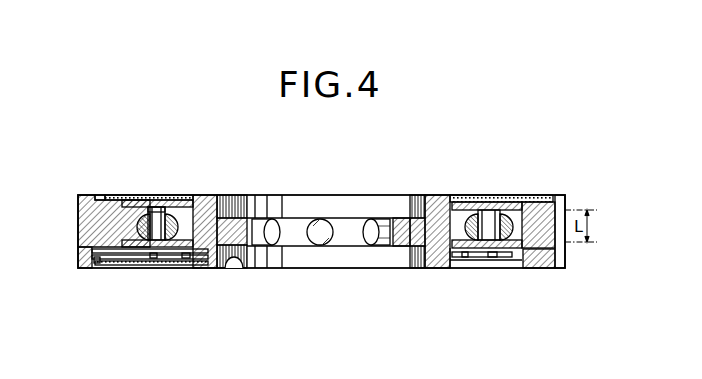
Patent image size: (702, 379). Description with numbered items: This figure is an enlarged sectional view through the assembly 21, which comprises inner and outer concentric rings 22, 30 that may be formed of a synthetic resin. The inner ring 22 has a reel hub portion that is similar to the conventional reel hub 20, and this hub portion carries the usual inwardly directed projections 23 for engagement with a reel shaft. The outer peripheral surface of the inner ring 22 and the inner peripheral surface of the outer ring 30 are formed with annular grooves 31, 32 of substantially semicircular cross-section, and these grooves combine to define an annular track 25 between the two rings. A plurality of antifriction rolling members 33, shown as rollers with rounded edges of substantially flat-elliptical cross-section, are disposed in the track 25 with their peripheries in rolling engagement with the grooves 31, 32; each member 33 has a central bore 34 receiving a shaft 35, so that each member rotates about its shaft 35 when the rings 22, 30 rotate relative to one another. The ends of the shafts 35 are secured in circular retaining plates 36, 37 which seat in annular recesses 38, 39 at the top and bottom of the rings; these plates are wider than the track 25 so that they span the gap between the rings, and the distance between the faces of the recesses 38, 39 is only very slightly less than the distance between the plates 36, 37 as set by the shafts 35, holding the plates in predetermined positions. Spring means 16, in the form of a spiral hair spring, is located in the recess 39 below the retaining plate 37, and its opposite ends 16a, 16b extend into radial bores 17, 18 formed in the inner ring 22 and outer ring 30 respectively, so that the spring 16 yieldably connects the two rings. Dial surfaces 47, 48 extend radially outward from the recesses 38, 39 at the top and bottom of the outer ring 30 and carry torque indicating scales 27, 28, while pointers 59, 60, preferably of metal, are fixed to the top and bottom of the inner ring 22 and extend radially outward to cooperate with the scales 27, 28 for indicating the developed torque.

The spring means 16 is at (475, 258).
The spring end 16a is at (198, 256).
The spring end 16b is at (113, 263).
The radial bore 17 is at (190, 260).
The radial bore 18 is at (100, 260).
The reel hub 20 is at (403, 222).
The assembly 21 is at (469, 198).
The inner ring 22 is at (236, 201).
The inwardly directed projections 23 is at (373, 223).
The annular track 25 is at (462, 232).
The torque indicating scale 27 is at (100, 195).
The torque indicating scale 28 is at (533, 261).
The outer ring 30 is at (86, 208).
The annular groove 31 is at (233, 252).
The annular groove 32 is at (128, 230).
The antifriction rolling member 33 is at (135, 205).
The bore 34 is at (172, 214).
The shaft 35 is at (160, 240).
The retaining plate 36 is at (506, 206).
The retaining plate 37 is at (511, 255).
The annular recess 38 is at (124, 201).
The annular recess 39 is at (128, 248).
The dial surface 47 is at (533, 199).
The dial surface 48 is at (543, 263).
The pointer 59 is at (153, 202).
The pointer 60 is at (128, 264).